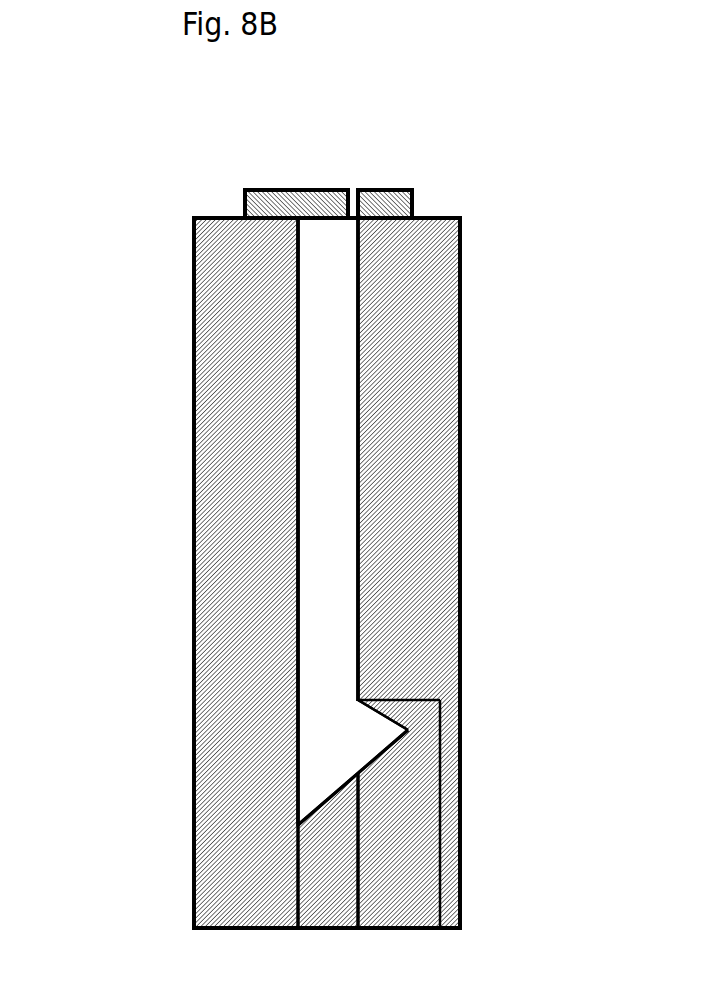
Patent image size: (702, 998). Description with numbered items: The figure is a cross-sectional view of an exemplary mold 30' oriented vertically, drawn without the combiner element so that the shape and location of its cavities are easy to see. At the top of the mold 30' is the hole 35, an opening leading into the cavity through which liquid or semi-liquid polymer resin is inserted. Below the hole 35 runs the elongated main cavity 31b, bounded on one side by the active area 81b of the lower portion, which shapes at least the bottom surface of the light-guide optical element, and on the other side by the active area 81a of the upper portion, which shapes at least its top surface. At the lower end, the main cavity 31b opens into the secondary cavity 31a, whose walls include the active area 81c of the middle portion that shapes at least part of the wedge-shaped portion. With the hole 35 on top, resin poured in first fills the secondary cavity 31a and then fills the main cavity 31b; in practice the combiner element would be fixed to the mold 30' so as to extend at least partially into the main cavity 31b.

The mold 30' is at (250, 518).
The hole 35 is at (352, 178).
The main cavity 31b is at (325, 463).
The active area 81a is at (357, 575).
The active area 81b is at (300, 540).
The secondary cavity 31a is at (373, 732).
The active area 81c is at (372, 715).